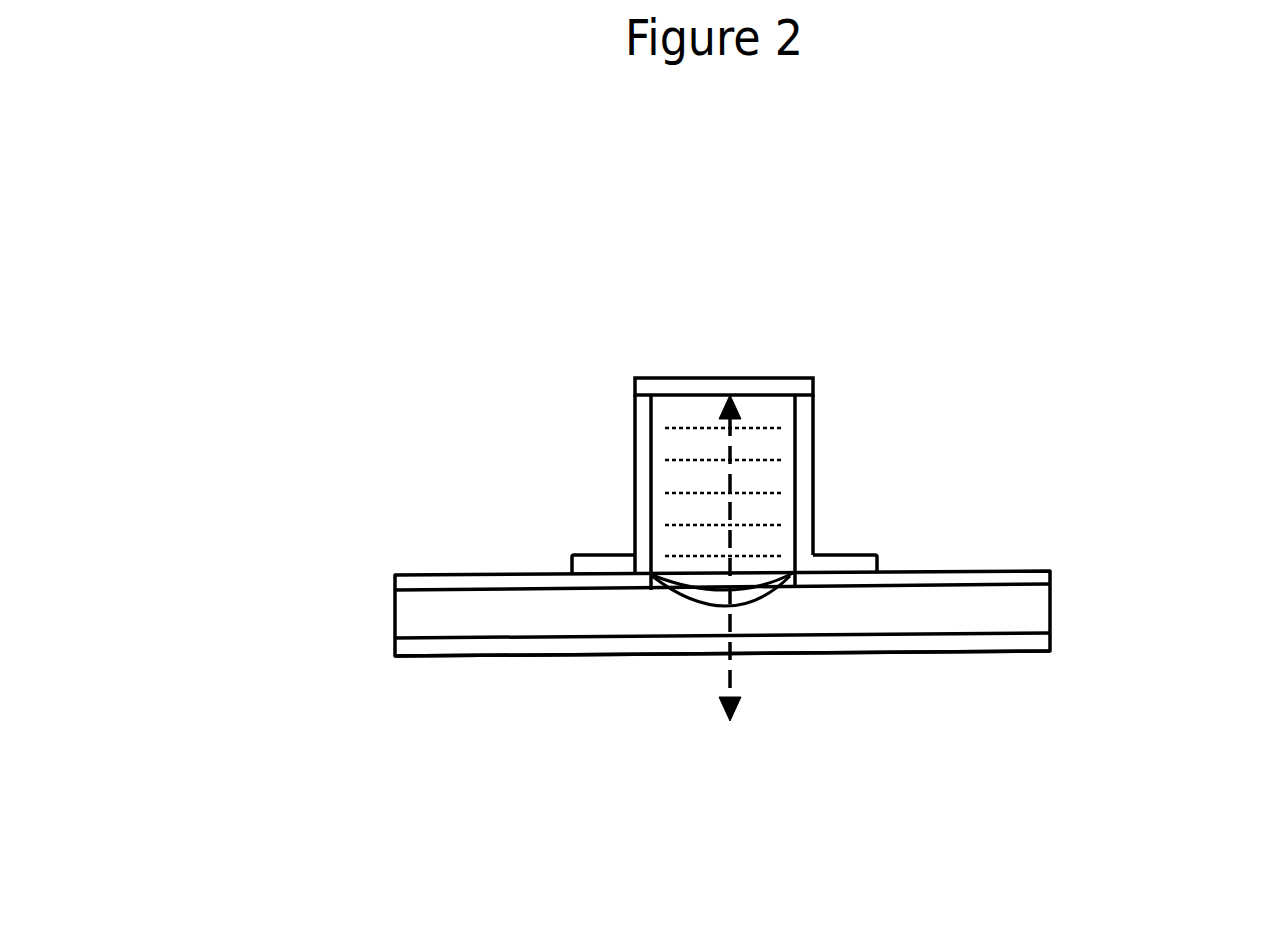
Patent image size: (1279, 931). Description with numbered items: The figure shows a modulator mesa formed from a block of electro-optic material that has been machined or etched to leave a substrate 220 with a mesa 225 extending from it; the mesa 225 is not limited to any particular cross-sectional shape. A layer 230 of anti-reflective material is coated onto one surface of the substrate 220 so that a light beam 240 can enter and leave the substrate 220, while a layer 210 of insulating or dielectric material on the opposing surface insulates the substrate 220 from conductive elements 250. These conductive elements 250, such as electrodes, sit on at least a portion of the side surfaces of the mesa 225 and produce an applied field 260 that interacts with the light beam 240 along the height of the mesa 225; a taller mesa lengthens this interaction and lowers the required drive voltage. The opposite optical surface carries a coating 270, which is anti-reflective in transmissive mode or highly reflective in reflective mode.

The layer of insulating or dielectric material 210 is at (397, 575).
The substrate 220 is at (1002, 617).
The layer of anti-reflective material 230 is at (983, 652).
The mesa 225 is at (640, 508).
The conductive elements 250 is at (827, 553).
The applied field 260 is at (677, 460).
The high reflective coating 270 is at (813, 393).
The light beam 240 is at (728, 670).